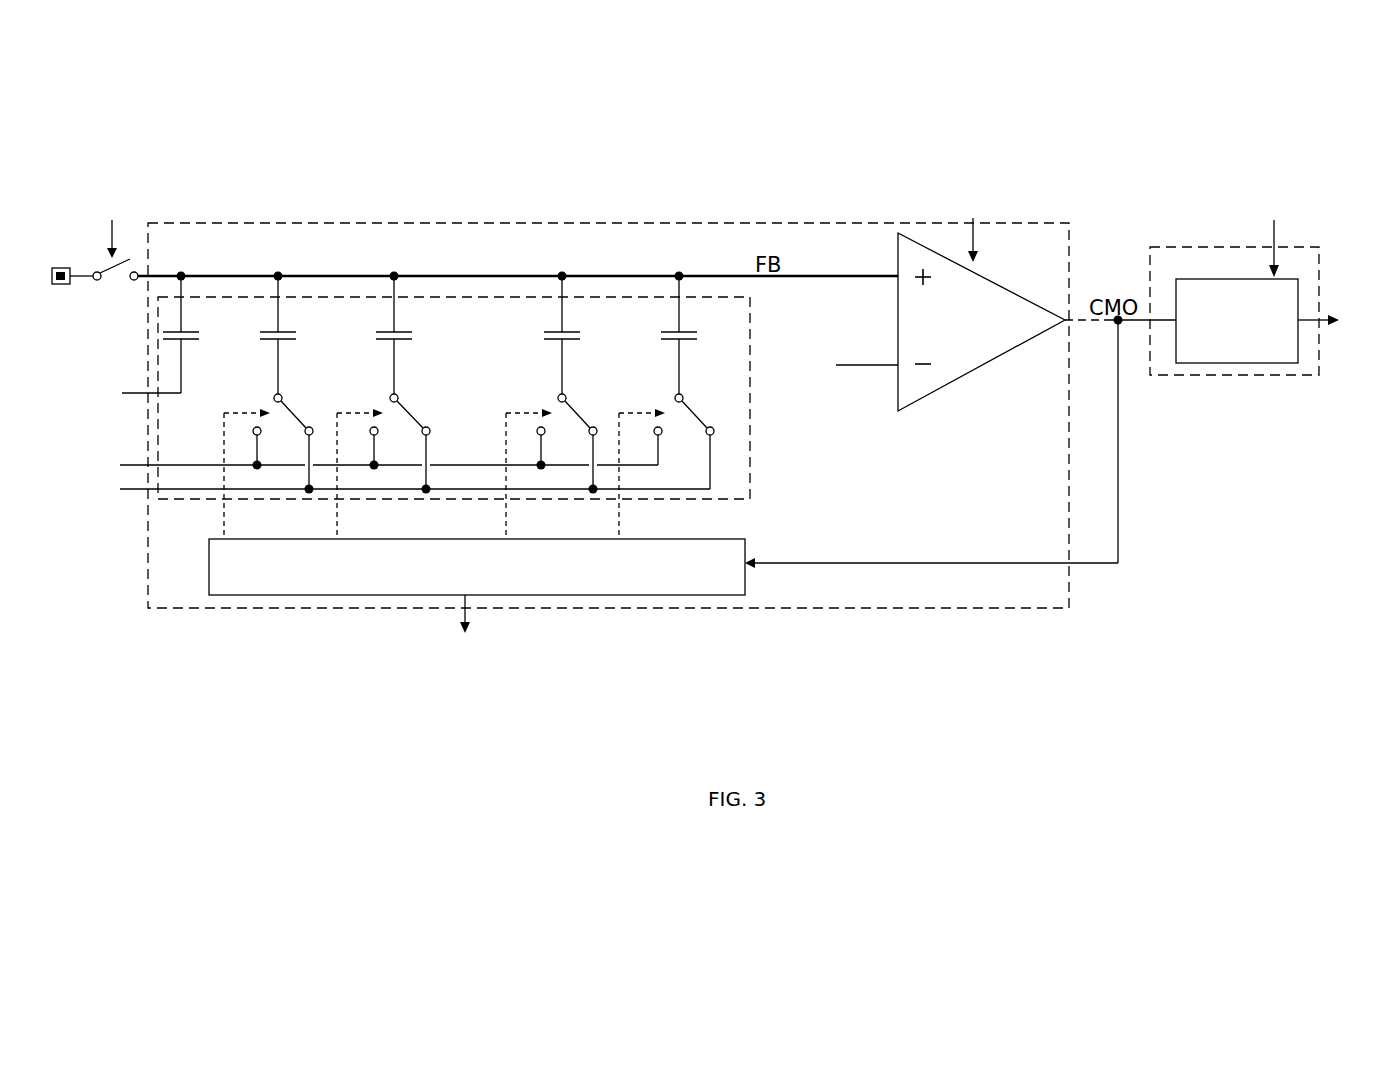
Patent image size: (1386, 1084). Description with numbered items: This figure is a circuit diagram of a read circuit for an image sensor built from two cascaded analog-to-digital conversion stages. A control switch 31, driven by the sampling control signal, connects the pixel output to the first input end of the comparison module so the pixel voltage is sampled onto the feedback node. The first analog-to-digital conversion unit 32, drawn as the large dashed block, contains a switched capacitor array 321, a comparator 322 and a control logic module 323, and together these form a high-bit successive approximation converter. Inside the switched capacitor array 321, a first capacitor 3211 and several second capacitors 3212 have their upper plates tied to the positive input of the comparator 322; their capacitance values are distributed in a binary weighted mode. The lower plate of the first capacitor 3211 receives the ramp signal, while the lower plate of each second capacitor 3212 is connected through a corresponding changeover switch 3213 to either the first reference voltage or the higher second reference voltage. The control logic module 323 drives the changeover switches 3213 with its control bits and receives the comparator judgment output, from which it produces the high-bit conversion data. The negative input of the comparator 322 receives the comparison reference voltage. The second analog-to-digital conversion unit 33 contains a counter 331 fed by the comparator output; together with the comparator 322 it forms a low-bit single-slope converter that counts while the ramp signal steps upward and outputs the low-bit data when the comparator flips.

The control switch 31 is at (97, 284).
The first analog-to-digital conversion unit 32 is at (1069, 407).
The second analog-to-digital conversion unit 33 is at (1268, 377).
The switched capacitor array 321 is at (750, 412).
The comparator 322 is at (960, 378).
The control logic module 323 is at (745, 539).
The counter 331 is at (1230, 363).
The first capacitor 3211 is at (200, 340).
The second capacitor 3212 is at (297, 340).
The changeover switch 3213 is at (431, 432).